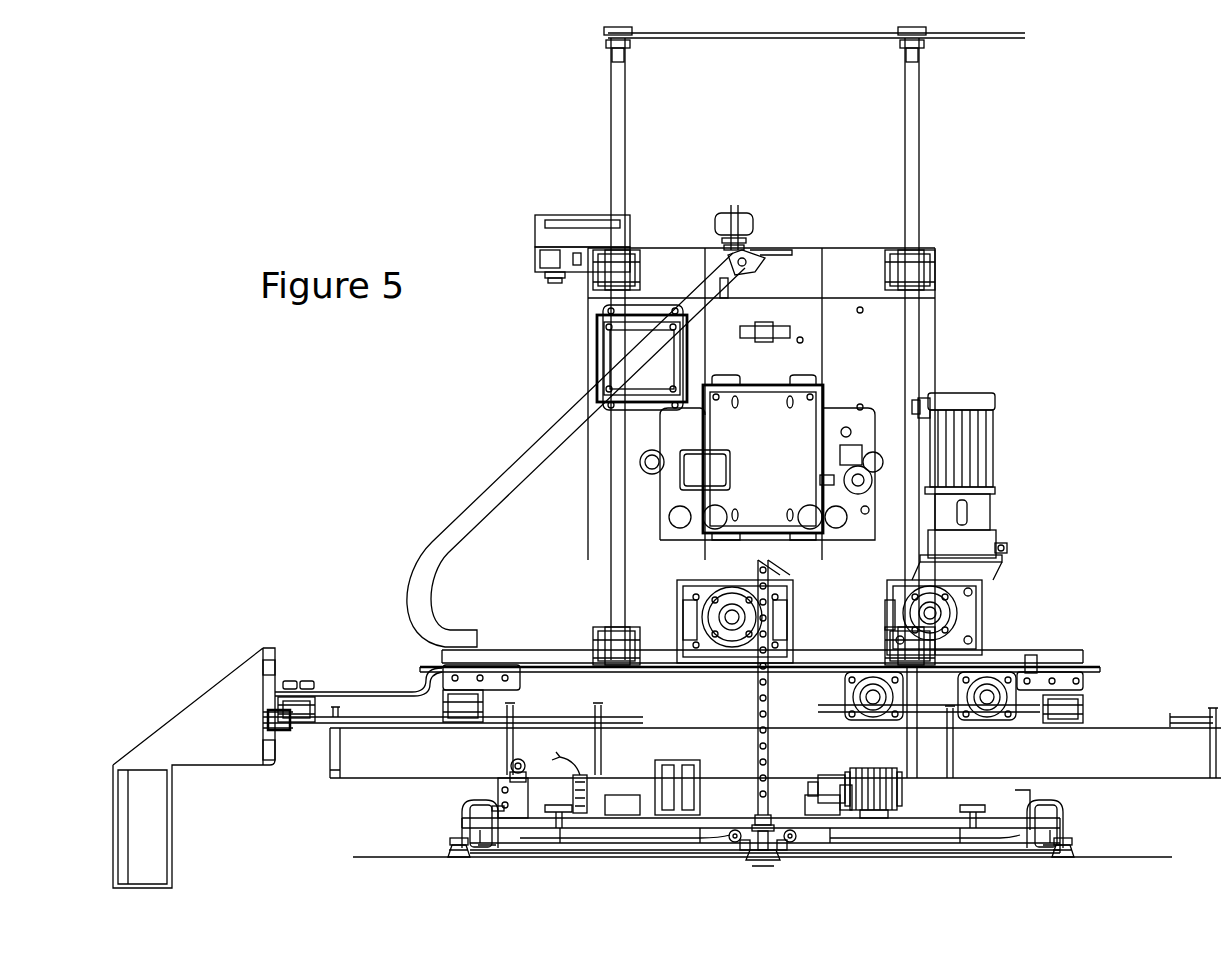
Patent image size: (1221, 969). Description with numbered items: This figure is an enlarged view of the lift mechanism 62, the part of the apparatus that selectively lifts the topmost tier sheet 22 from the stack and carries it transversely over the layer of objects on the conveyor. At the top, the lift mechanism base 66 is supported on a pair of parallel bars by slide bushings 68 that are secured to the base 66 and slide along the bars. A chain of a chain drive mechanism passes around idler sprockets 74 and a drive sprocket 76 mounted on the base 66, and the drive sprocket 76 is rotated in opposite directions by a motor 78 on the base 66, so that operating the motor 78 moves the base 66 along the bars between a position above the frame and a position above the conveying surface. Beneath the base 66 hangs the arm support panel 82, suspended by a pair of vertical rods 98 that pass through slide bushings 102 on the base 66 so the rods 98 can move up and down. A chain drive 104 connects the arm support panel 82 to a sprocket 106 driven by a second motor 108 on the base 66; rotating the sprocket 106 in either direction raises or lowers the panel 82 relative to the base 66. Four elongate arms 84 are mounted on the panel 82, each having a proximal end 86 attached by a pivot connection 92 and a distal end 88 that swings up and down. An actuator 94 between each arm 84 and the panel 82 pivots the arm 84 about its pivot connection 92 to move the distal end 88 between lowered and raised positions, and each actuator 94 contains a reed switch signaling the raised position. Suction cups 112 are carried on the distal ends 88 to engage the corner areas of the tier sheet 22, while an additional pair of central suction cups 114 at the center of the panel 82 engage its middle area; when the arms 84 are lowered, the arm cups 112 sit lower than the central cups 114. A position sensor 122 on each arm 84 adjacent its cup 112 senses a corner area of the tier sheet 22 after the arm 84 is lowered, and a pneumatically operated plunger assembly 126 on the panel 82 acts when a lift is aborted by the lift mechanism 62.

The tier sheet 22 is at (373, 855).
The lift mechanism 62 is at (985, 355).
The lift mechanism base 66 is at (1013, 665).
The slide bushings 68 is at (403, 668).
The idler sprockets 74 is at (920, 680).
The drive sprocket 76 is at (1005, 548).
The motor 78 is at (980, 520).
The arm support panel 82 is at (585, 820).
The elongate arms 84 is at (605, 848).
The arm proximal ends 86 is at (742, 853).
The arm distal ends 88 is at (487, 845).
The pivot connections 92 is at (730, 838).
The actuator 94 is at (640, 825).
The vertical rods 98 is at (590, 668).
The slide bushings 102 is at (603, 263).
The chain drive 104 is at (697, 585).
The sprocket 106 is at (700, 578).
The motor 108 is at (690, 495).
The suction cups 112 is at (456, 845).
The central suction cups 114 is at (765, 872).
The position sensor 122 is at (488, 850).
The plunger assembly 126 is at (1013, 787).